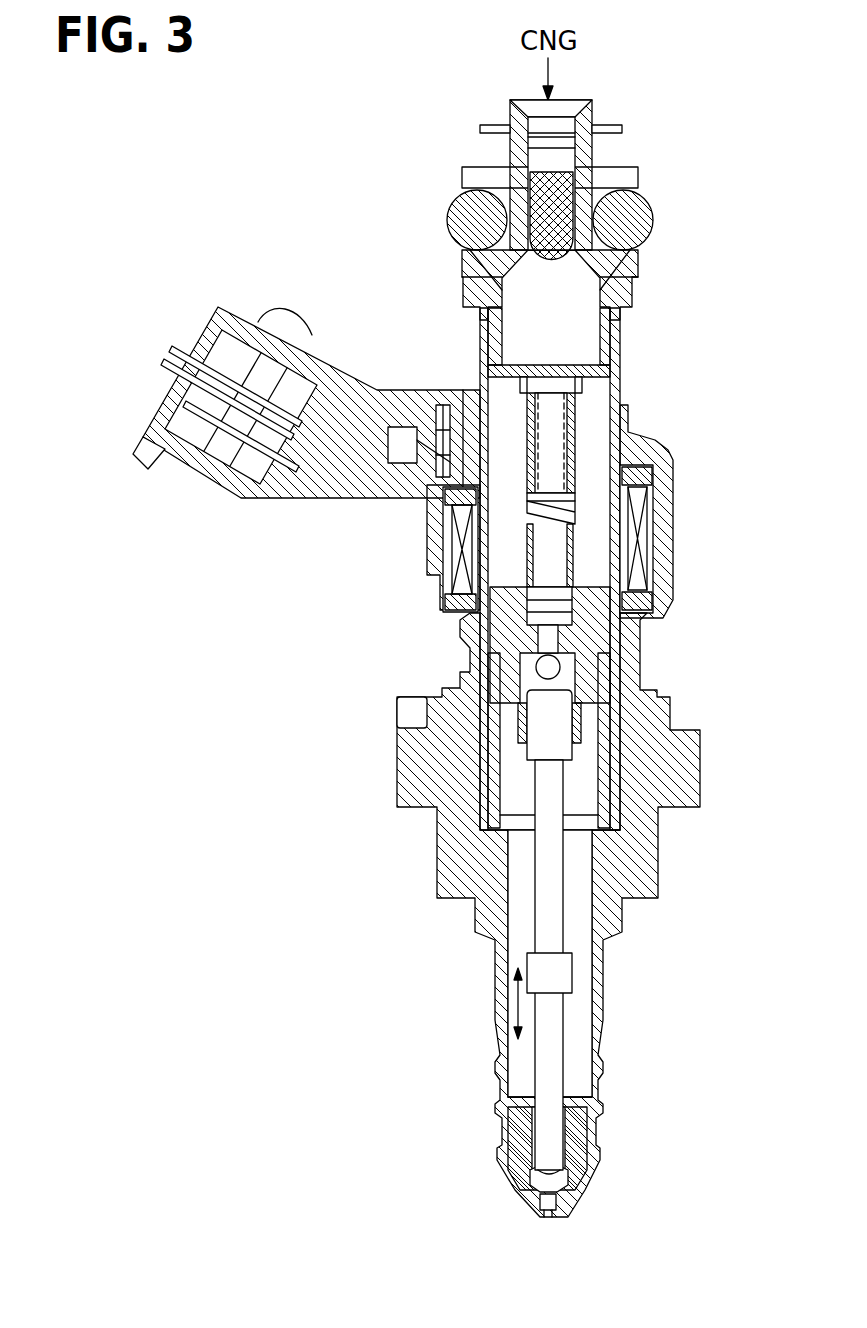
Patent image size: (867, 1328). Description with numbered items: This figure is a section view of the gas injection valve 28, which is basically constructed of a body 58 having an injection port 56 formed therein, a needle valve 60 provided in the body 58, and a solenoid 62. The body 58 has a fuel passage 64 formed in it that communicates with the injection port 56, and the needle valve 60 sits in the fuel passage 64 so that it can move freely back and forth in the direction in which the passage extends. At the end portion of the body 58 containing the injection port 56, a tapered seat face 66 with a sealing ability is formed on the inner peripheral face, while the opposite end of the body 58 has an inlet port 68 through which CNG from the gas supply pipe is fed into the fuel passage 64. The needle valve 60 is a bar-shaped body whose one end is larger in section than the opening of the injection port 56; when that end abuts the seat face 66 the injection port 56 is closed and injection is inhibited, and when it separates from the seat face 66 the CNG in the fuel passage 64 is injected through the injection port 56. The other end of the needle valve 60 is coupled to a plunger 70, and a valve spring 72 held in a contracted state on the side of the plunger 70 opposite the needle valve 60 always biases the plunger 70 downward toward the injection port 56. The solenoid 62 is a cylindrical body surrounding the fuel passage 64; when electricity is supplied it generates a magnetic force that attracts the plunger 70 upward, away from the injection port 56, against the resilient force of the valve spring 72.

The gas injection valve 28 is at (620, 92).
The inlet port 68 is at (532, 98).
The solenoid 62 is at (635, 495).
The valve spring 72 is at (523, 590).
The plunger 70 is at (650, 632).
The body 58 is at (660, 875).
The fuel passage 64 is at (573, 937).
The needle valve 60 is at (550, 1042).
The tapered seat face 66 is at (537, 1187).
The injection port 56 is at (550, 1213).